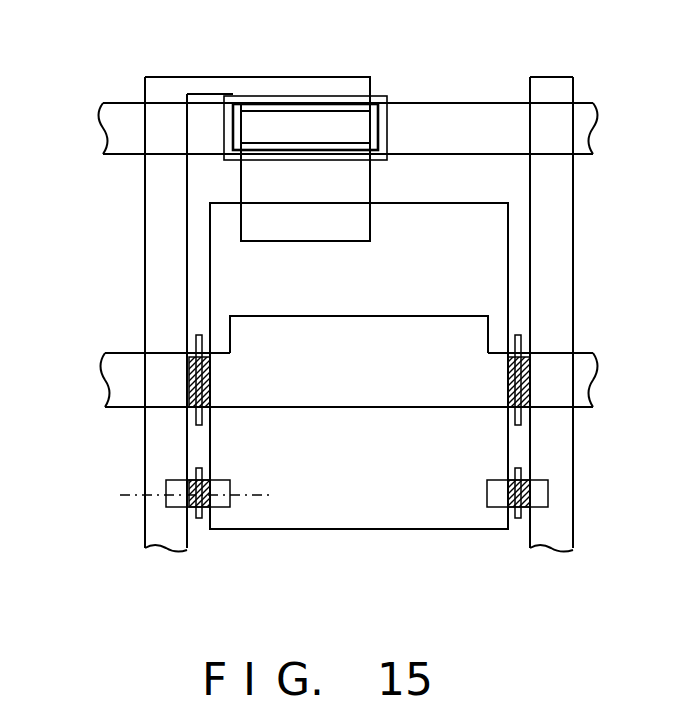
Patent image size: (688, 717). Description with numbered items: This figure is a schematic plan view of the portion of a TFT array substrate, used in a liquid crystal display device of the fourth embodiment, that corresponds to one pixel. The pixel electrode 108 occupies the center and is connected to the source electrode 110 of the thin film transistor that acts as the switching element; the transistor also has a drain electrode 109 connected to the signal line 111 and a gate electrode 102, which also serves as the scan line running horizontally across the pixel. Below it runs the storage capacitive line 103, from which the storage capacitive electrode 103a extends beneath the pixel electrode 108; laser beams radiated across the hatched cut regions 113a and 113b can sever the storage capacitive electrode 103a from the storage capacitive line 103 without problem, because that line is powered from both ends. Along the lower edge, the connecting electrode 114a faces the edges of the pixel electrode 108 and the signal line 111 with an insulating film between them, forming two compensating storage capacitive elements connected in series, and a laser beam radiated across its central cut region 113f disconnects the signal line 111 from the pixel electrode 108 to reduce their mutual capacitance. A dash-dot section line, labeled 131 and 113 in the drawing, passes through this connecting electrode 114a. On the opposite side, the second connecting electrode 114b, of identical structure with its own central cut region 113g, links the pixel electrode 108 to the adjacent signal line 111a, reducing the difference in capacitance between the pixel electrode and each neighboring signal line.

The gate electrode 102 is at (100, 128).
The storage capacitive line 103 is at (106, 379).
The storage capacitive electrode 103a is at (418, 317).
The pixel electrode 108 is at (444, 218).
The drain electrode 109 is at (290, 88).
The source electrode 110 is at (303, 228).
The signal line 111 is at (146, 232).
The signal line 111a is at (573, 200).
The contact hole region 113 is at (271, 497).
The cut region 113a is at (210, 378).
The cut region 113b is at (508, 379).
The cut region 113f is at (200, 522).
The cut region 113g is at (515, 521).
The connecting electrode 114a is at (228, 482).
The connecting electrode 114b is at (487, 485).
The cutting line 131 is at (119, 496).